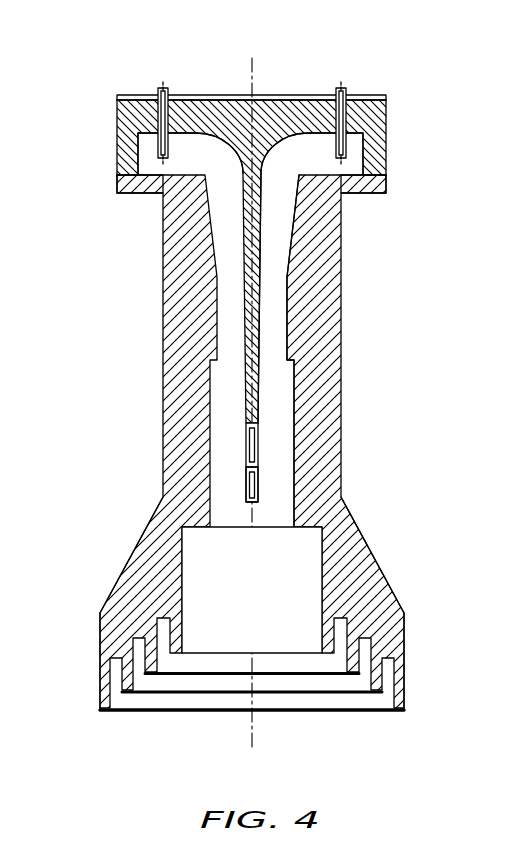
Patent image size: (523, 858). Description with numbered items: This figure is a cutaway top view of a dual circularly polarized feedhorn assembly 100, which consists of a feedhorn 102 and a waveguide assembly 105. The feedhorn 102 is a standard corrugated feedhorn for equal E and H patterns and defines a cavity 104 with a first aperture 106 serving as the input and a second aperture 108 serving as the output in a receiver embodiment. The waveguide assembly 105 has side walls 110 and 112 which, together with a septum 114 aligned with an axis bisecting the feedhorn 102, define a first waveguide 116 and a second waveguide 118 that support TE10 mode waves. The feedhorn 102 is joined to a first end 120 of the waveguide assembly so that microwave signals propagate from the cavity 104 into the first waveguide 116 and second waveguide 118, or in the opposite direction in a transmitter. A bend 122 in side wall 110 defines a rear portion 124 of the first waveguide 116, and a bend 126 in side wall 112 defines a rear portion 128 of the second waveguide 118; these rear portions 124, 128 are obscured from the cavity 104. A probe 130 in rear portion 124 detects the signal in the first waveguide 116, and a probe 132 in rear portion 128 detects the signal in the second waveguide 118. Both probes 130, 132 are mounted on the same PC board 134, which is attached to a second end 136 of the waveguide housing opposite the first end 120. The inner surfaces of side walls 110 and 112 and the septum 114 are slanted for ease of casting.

The feedhorn assembly 100 is at (260, 389).
The feedhorn 102 is at (405, 615).
The cavity 104 is at (304, 620).
The waveguide assembly 105 is at (291, 635).
The first aperture 106 is at (332, 712).
The second aperture 108 is at (249, 504).
The side wall 110 is at (128, 142).
The side wall 112 is at (386, 137).
The septum 114 is at (245, 400).
The first waveguide 116 is at (237, 334).
The second waveguide 118 is at (275, 313).
The first end 120 is at (163, 498).
The bend 122 is at (163, 193).
The rear portion 124 is at (197, 152).
The bend 126 is at (341, 193).
The rear portion 128 is at (307, 152).
The probe 130 is at (153, 148).
The probe 132 is at (345, 147).
The PC board 134 is at (225, 93).
The second end 136 is at (117, 97).